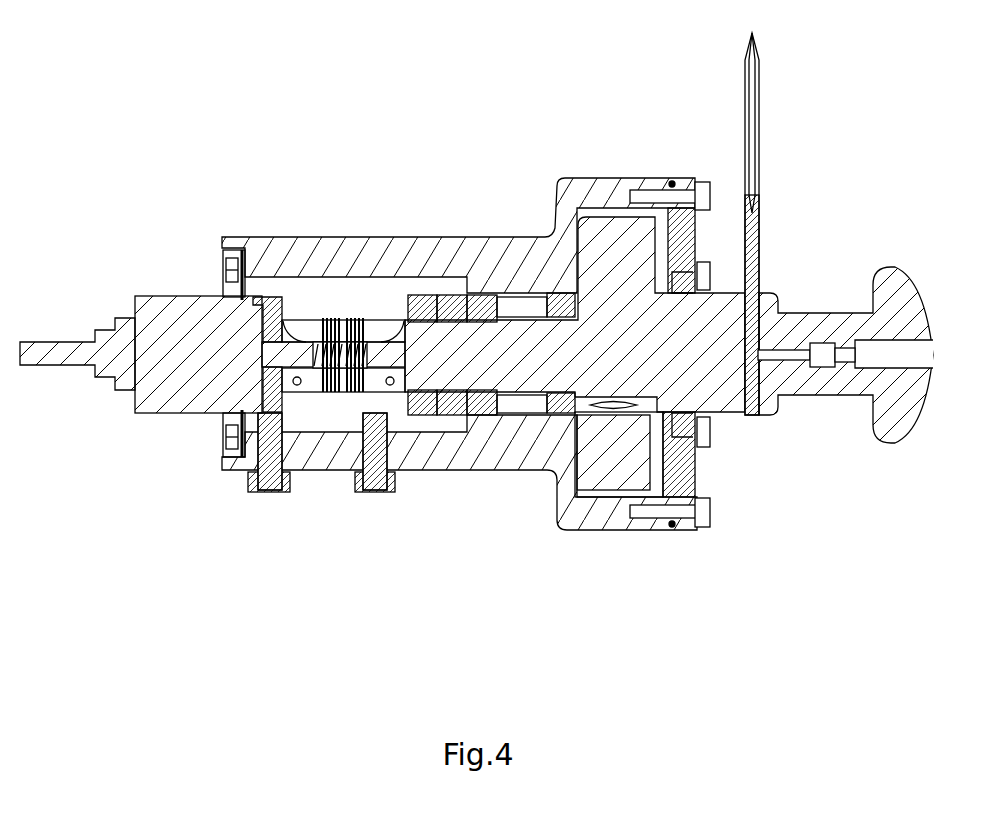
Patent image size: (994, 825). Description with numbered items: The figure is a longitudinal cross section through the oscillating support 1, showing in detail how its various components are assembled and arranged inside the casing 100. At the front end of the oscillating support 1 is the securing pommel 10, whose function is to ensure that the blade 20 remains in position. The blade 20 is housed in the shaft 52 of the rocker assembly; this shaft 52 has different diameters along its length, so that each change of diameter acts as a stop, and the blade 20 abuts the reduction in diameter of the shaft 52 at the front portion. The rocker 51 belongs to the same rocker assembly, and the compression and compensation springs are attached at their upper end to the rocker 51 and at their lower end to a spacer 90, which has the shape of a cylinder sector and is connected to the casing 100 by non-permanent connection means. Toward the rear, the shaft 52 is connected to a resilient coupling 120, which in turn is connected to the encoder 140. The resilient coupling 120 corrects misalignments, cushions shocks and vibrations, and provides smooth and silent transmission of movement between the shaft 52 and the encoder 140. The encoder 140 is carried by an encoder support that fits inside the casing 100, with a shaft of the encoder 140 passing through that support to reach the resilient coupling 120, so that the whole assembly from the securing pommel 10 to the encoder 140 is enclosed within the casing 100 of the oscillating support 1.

The oscillating support 1 is at (493, 138).
The securing pommel 10 is at (830, 323).
The blade 20 is at (760, 130).
The rocker 51 is at (617, 232).
The shaft 52 is at (523, 393).
The spacer 90 is at (617, 477).
The casing 100 is at (388, 250).
The resilient coupling 120 is at (333, 392).
The encoder 140 is at (175, 308).